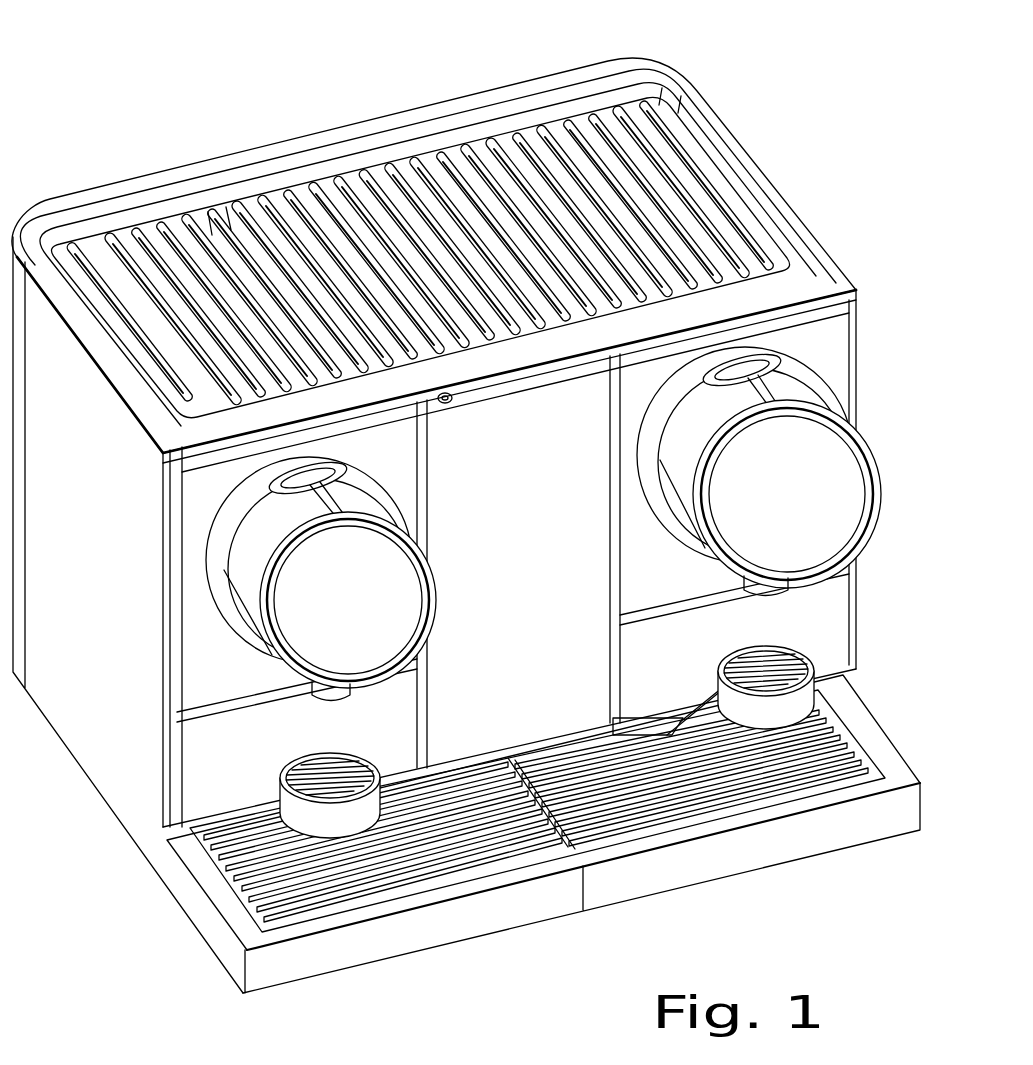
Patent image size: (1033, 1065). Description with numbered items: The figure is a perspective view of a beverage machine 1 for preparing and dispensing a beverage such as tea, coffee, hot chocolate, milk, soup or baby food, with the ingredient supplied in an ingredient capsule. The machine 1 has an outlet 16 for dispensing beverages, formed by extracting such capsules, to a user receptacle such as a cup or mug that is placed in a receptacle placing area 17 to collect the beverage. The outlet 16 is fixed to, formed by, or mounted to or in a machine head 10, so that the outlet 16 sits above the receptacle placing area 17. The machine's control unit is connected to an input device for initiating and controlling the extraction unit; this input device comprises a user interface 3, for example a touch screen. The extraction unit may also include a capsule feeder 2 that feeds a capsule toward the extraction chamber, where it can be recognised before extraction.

The beverage machine 1 is at (200, 113).
The capsule feeder 2 is at (290, 483).
The user interface 3 is at (350, 598).
The machine head 10 is at (245, 558).
The outlet 16 is at (333, 695).
The receptacle placing area 17 is at (283, 786).